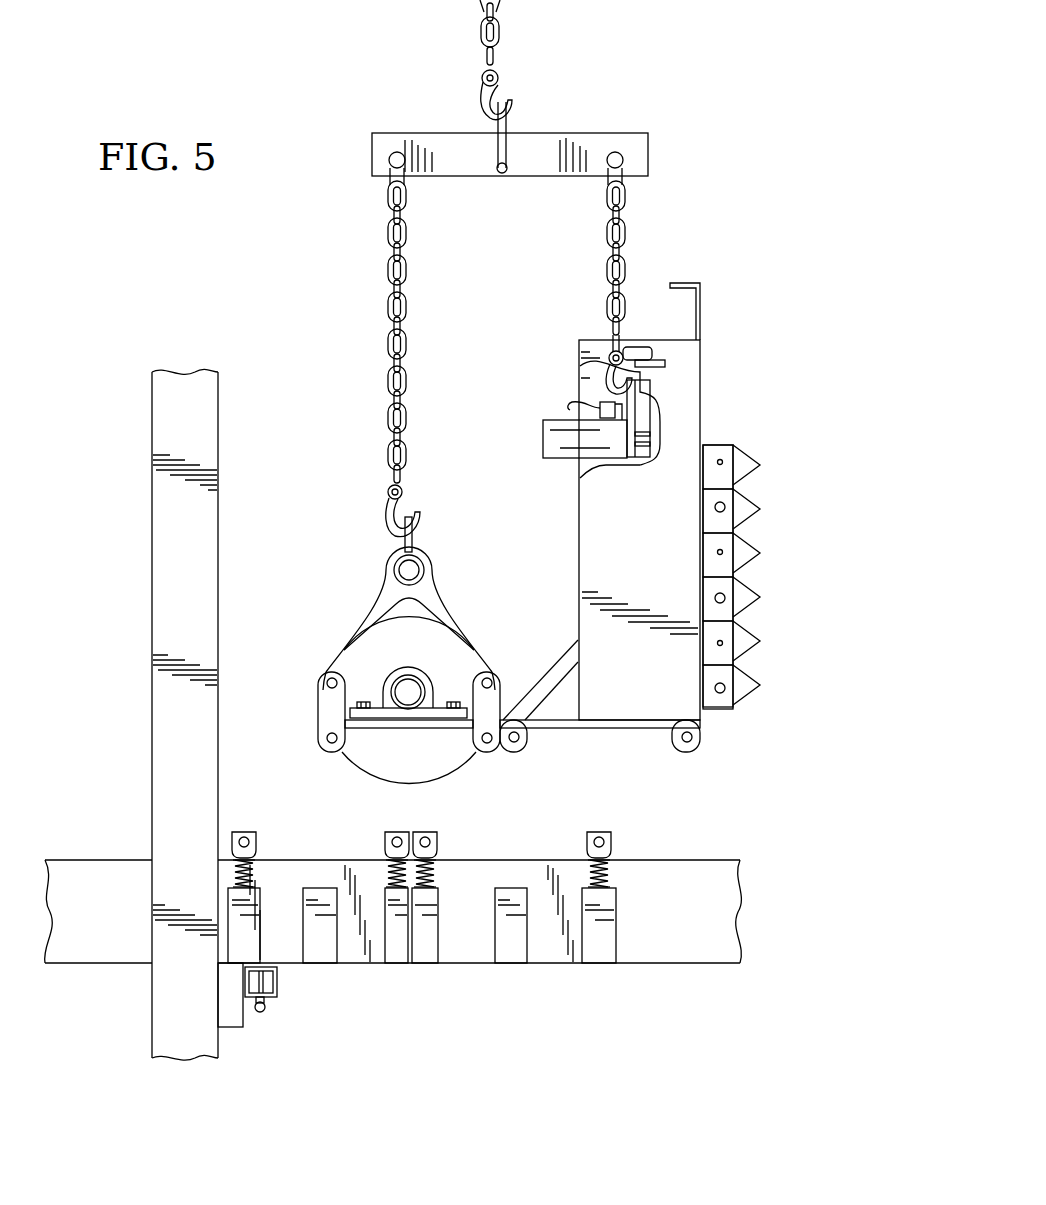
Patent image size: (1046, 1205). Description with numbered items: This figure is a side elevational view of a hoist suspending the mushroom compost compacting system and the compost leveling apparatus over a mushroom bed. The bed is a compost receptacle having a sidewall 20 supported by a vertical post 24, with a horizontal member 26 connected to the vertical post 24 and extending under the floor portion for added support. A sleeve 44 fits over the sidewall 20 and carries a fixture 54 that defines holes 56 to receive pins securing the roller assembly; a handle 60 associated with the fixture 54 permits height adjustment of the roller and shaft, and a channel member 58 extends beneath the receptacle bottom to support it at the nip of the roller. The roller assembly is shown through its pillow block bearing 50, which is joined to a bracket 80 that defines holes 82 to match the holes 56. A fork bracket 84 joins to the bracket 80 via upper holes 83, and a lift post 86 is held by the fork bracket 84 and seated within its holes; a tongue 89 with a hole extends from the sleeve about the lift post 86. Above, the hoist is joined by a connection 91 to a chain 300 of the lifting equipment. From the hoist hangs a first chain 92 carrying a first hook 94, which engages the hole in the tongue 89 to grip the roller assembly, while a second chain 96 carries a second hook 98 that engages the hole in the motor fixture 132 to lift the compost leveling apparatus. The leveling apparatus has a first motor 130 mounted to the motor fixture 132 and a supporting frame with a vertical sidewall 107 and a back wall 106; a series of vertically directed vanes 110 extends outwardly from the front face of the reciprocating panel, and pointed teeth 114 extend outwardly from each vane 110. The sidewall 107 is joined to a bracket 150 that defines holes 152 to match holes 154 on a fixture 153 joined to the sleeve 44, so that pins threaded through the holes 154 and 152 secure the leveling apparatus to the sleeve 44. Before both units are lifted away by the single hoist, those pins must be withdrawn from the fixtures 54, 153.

The chain 300 is at (500, 34).
The connection 91 is at (508, 130).
The first chain 92 is at (388, 300).
The first hook 94 is at (388, 505).
The tongue 89 is at (404, 540).
The lift post 86 is at (412, 568).
The fork bracket 84 is at (416, 593).
The pillow block bearing 50 is at (395, 675).
The upper holes 83 is at (328, 680).
The bracket 80 is at (375, 711).
The holes 82 is at (328, 746).
The second lifting chain 96 is at (606, 240).
The second hook 98 is at (600, 366).
The back wall 106 is at (686, 280).
The vertical sidewall 107 is at (690, 358).
The vanes 110 is at (758, 528).
The pointed teeth 114 is at (755, 493).
The first motor 130 is at (544, 445).
The motor fixture 132 is at (570, 406).
The bracket 150 is at (700, 728).
The holes 152 is at (648, 725).
The sidewall 20 is at (78, 860).
The vertical post 24 is at (160, 1003).
The horizontal member 26 is at (234, 1028).
The channel member 58 is at (278, 992).
The handle 60 is at (262, 1013).
The fixture 54 is at (318, 893).
The holes 56 is at (246, 835).
The fixture 153 is at (474, 903).
The holes 154 is at (428, 835).
The sleeve 44 is at (472, 955).